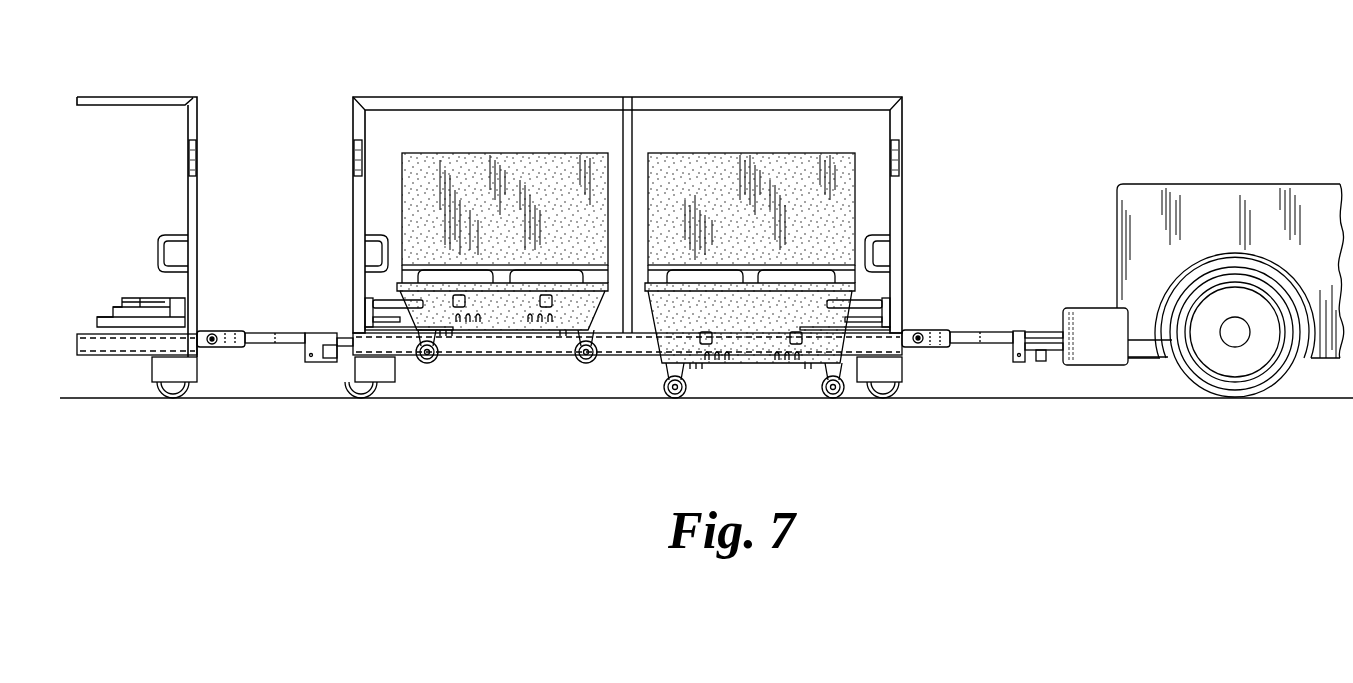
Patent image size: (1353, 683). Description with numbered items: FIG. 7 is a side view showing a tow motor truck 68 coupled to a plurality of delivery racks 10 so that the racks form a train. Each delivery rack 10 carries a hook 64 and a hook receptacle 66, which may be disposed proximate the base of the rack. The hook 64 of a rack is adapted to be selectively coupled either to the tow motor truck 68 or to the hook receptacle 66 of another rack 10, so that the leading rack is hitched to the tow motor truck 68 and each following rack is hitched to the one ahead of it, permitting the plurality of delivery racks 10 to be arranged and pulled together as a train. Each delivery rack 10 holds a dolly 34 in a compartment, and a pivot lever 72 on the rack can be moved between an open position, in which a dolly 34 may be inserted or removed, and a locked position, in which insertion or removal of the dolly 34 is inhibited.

The delivery rack 10 is at (342, 74).
The dolly 34 is at (506, 338).
The hook 64 is at (333, 362).
The hook receptacle 66 is at (335, 338).
The tow motor truck 68 is at (1227, 184).
The pivot lever 72 is at (447, 305).